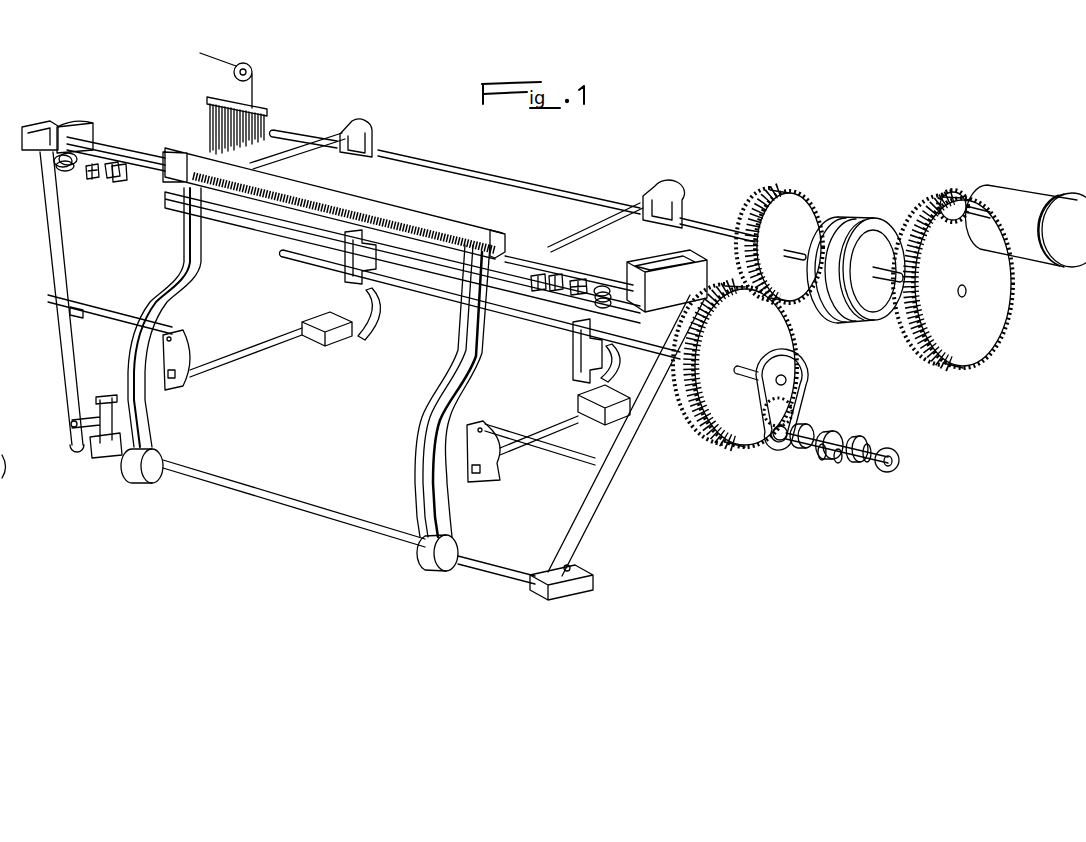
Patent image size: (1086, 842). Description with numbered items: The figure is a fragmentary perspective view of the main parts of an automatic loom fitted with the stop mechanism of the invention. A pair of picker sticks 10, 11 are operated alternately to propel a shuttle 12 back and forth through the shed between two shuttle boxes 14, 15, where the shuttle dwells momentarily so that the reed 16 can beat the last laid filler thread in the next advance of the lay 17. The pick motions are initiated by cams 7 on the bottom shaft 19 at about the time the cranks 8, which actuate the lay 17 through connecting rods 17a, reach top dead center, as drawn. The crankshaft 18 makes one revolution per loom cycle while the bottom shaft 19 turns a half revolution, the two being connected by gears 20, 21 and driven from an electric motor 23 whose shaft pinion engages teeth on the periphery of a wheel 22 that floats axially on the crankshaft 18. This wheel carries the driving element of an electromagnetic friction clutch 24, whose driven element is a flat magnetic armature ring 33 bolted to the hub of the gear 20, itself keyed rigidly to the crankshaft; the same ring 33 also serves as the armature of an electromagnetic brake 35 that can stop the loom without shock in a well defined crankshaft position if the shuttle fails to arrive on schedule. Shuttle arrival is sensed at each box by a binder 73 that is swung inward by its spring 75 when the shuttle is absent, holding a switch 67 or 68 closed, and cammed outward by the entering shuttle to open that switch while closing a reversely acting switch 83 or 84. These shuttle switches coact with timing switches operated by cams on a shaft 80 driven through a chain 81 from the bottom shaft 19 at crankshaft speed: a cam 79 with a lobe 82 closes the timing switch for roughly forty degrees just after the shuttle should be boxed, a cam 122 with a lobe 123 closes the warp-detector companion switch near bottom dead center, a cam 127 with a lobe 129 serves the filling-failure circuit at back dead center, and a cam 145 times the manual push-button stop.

The cam 7 is at (328, 272).
The crank 8 is at (372, 140).
The picker stick 10 is at (589, 512).
The picker stick 11 is at (43, 236).
The shuttle 12 is at (612, 272).
The shuttle box 14 is at (122, 132).
The shuttle box 15 is at (641, 277).
The reed 16 is at (260, 194).
The lay 17 is at (273, 210).
The connecting rod 17a is at (316, 147).
The crankshaft 18 is at (493, 179).
The bottom shaft 19 is at (450, 297).
The gear 20 is at (782, 192).
The gear 21 is at (695, 440).
The wheel 22 is at (988, 331).
The electric motor 23 is at (1020, 186).
The clutch 24 is at (886, 216).
The armature ring 33 is at (853, 218).
The brake 35 is at (834, 215).
The switch 67 is at (117, 182).
The switch 68 is at (537, 287).
The binder 73 is at (80, 164).
The spring 75 is at (96, 173).
The cam 79 is at (812, 432).
The shaft 80 is at (828, 443).
The chain 81 is at (800, 395).
The lobe 82 is at (803, 447).
The switch 83 is at (108, 179).
The switch 84 is at (556, 289).
The cam 122 is at (835, 464).
The lobe 123 is at (820, 462).
The cam 127 is at (868, 458).
The lobe 129 is at (862, 447).
The cam 145 is at (889, 472).